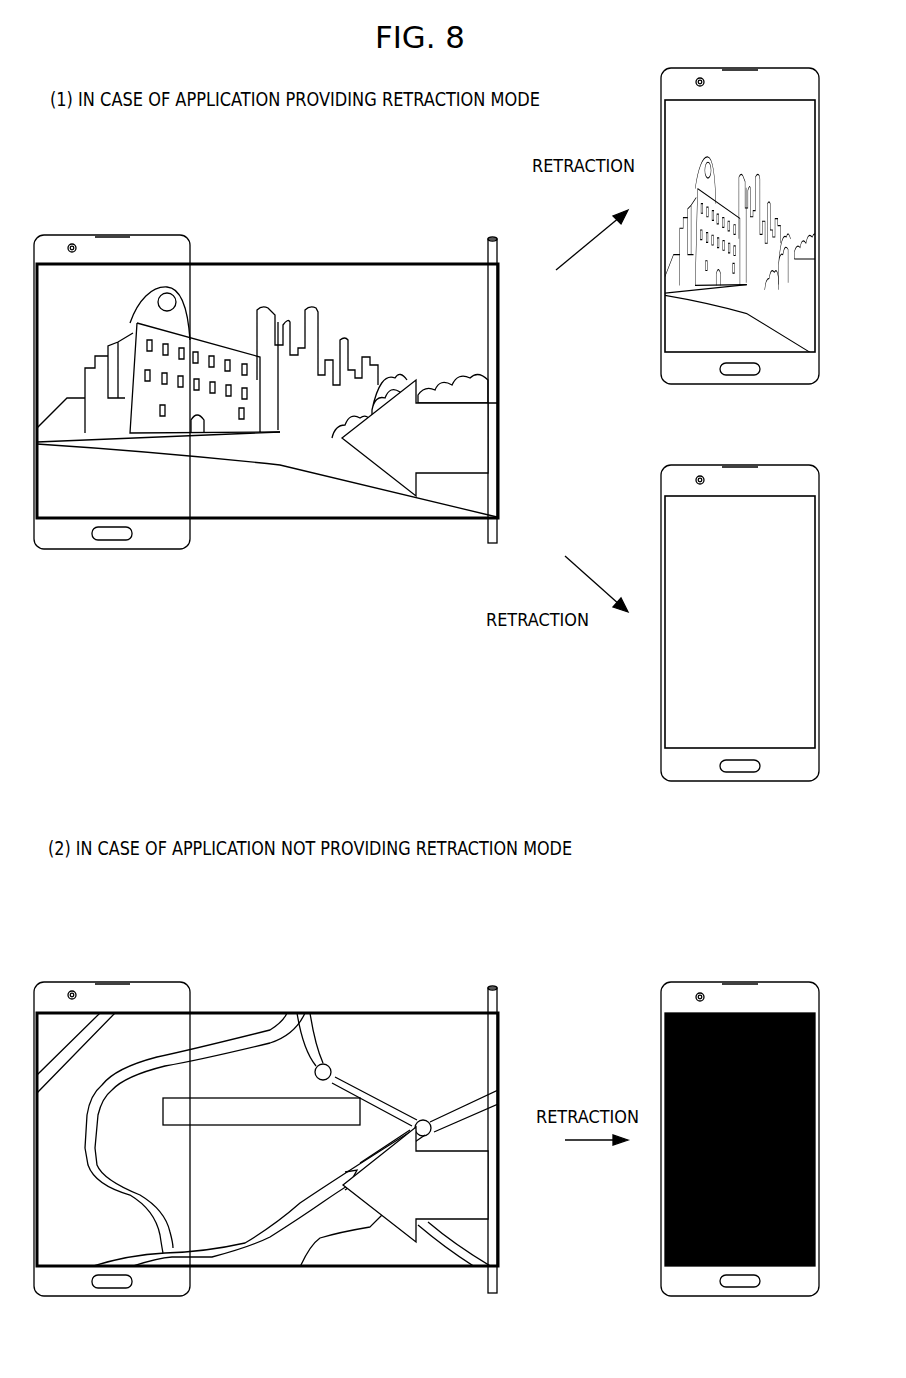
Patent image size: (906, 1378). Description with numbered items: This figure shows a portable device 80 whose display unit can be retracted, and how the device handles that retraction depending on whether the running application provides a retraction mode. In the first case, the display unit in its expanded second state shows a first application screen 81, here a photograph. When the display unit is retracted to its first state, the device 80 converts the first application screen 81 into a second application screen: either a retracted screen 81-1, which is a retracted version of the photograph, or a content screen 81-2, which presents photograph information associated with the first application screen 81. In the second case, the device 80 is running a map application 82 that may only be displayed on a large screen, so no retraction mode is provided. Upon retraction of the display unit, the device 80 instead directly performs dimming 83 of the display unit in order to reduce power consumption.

The device 80 is at (147, 247).
The first application screen 81 is at (254, 272).
The retracted screen 81-1 is at (683, 313).
The content screen 81-2 is at (683, 691).
The map application 82 is at (254, 1020).
The dimming 83 is at (665, 1210).